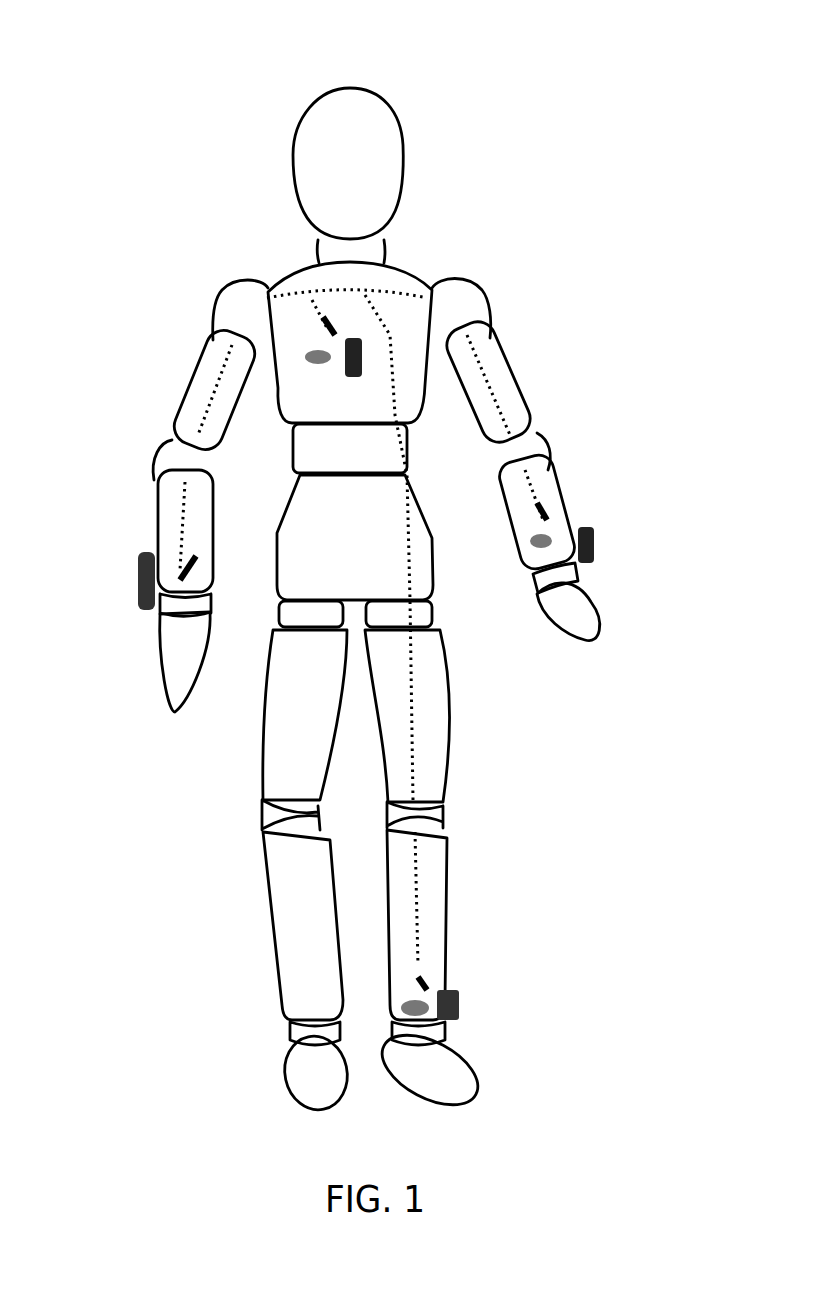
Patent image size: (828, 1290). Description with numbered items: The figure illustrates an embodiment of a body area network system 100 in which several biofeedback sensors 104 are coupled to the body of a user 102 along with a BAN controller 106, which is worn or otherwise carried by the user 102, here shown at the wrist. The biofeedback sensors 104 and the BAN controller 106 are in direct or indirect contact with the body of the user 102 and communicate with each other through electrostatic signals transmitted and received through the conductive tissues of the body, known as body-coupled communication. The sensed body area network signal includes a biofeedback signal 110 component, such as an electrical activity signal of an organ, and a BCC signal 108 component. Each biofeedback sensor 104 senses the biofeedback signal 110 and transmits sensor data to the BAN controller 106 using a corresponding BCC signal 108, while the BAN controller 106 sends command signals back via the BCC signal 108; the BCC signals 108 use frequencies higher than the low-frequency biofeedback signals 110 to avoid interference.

The body area network (BAN) system 100 is at (172, 98).
The user 102 is at (445, 214).
The biofeedback sensor 104 is at (355, 340).
The BAN controller 106 is at (138, 580).
The BCC signal 108 is at (338, 342).
The biofeedback signal 110 is at (322, 358).